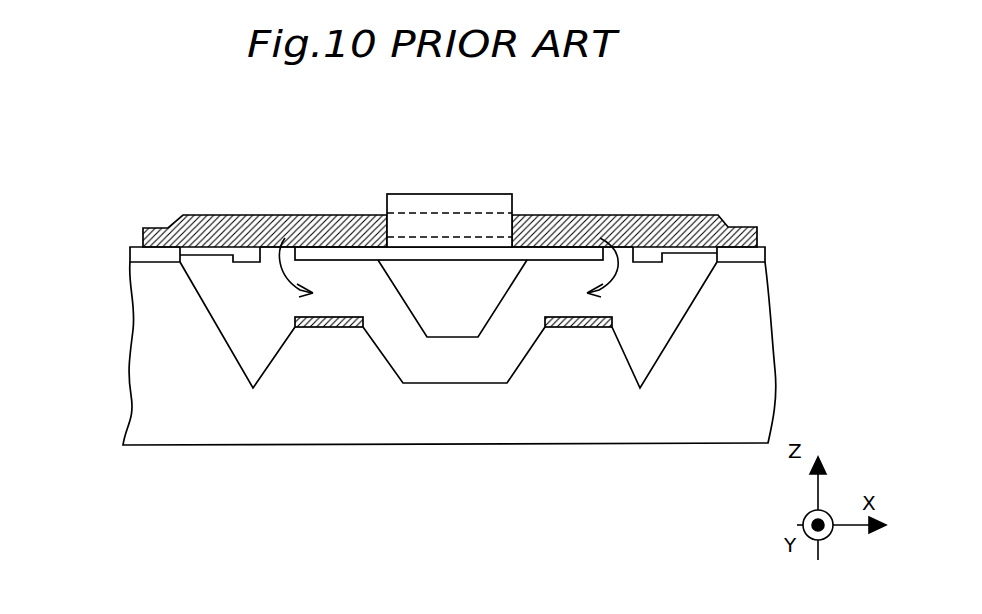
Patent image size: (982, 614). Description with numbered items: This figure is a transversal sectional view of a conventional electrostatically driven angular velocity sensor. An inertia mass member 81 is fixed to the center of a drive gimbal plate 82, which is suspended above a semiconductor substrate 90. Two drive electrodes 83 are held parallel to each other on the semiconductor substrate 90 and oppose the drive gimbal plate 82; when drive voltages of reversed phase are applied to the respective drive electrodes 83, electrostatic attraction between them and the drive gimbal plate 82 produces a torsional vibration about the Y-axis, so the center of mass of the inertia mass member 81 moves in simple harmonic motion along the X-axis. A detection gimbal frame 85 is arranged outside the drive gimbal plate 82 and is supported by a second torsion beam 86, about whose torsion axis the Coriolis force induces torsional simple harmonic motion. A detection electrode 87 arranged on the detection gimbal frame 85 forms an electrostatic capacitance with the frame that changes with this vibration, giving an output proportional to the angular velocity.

The inertia mass member 81 is at (487, 198).
The drive gimbal plate 82 is at (552, 248).
The drive electrodes 83 is at (575, 328).
The detection gimbal frame 85 is at (250, 250).
The second torsion beam 86 is at (693, 250).
The detection electrode 87 is at (677, 215).
The semiconductor substrate 90 is at (183, 437).